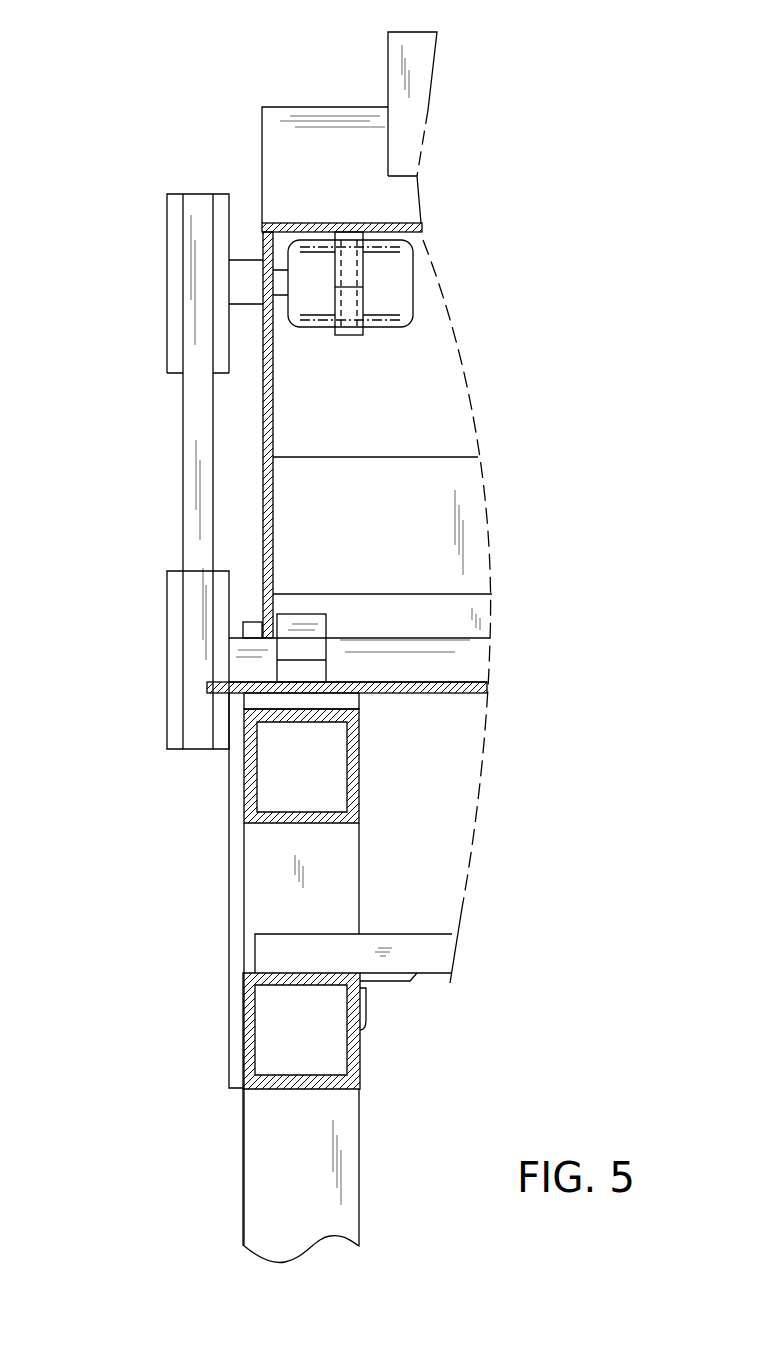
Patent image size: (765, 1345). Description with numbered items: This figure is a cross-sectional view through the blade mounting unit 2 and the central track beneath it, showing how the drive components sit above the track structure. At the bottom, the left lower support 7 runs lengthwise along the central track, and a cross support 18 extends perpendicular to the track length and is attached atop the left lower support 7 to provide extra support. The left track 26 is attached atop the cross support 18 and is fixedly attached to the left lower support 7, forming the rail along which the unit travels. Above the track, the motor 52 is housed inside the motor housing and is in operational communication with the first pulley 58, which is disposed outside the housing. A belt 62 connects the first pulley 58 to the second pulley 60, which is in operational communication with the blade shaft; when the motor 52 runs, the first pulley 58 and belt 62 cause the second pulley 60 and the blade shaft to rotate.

The solar panel mounting assembly 2 is at (148, 140).
The left lower support 7 is at (248, 1038).
The cross supports 18 is at (425, 952).
The left track 26 is at (250, 790).
The motor 52 is at (413, 258).
The first pulley 58 is at (170, 264).
The second pulley 60 is at (170, 625).
The belt 62 is at (183, 413).